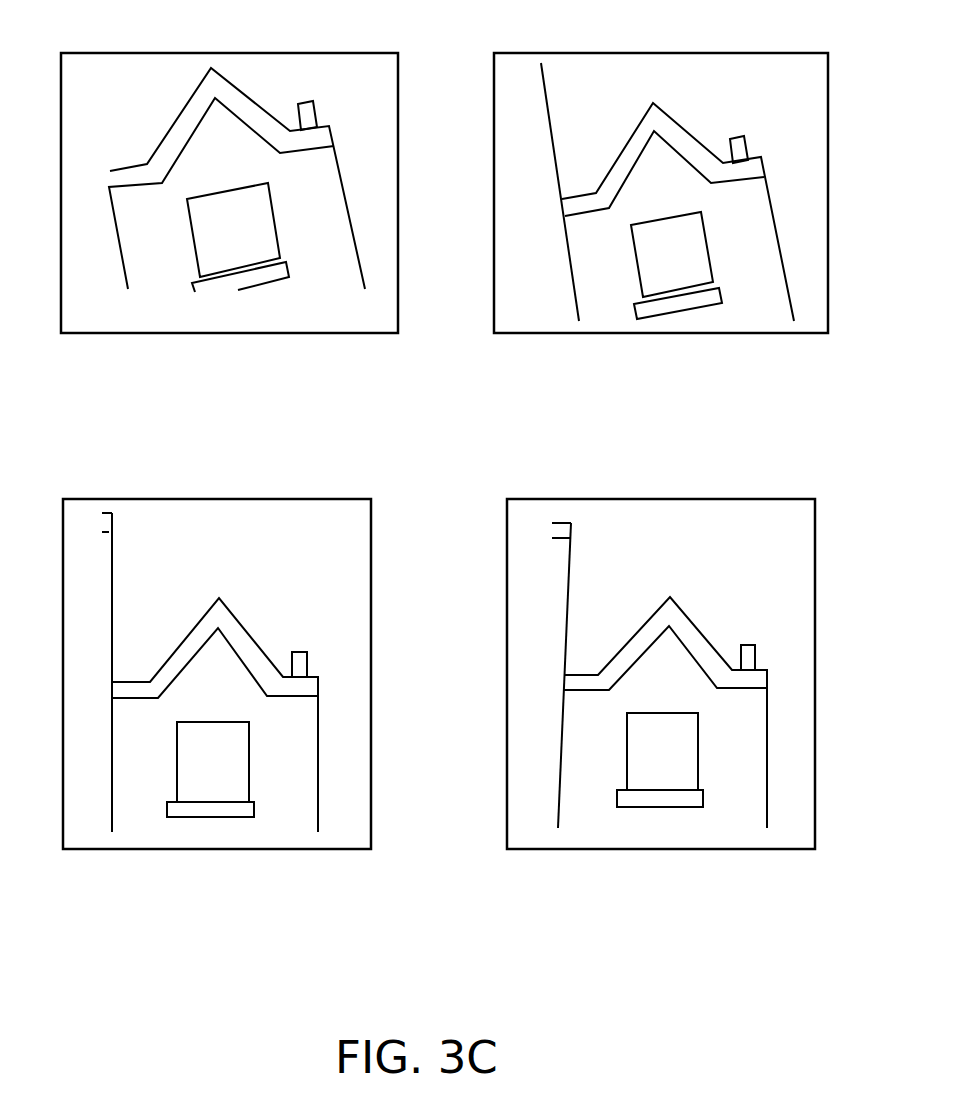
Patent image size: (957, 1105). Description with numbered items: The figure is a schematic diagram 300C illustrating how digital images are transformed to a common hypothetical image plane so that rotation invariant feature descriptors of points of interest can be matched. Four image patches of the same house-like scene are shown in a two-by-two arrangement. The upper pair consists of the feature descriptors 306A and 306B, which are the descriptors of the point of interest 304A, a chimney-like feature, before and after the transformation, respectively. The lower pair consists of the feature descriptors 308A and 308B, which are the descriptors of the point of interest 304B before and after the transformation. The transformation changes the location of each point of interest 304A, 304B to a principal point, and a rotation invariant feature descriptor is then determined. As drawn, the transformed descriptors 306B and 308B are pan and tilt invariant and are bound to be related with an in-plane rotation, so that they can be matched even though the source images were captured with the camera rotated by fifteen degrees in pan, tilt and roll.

The schematic diagram 300C is at (469, 511).
The point of interest 304A is at (313, 107).
The point of interest 304B is at (308, 660).
The feature descriptor 306A is at (295, 335).
The rotation invariant feature descriptor 306B is at (755, 335).
The feature descriptor 308A is at (262, 850).
The rotation invariant feature descriptor 308B is at (693, 850).